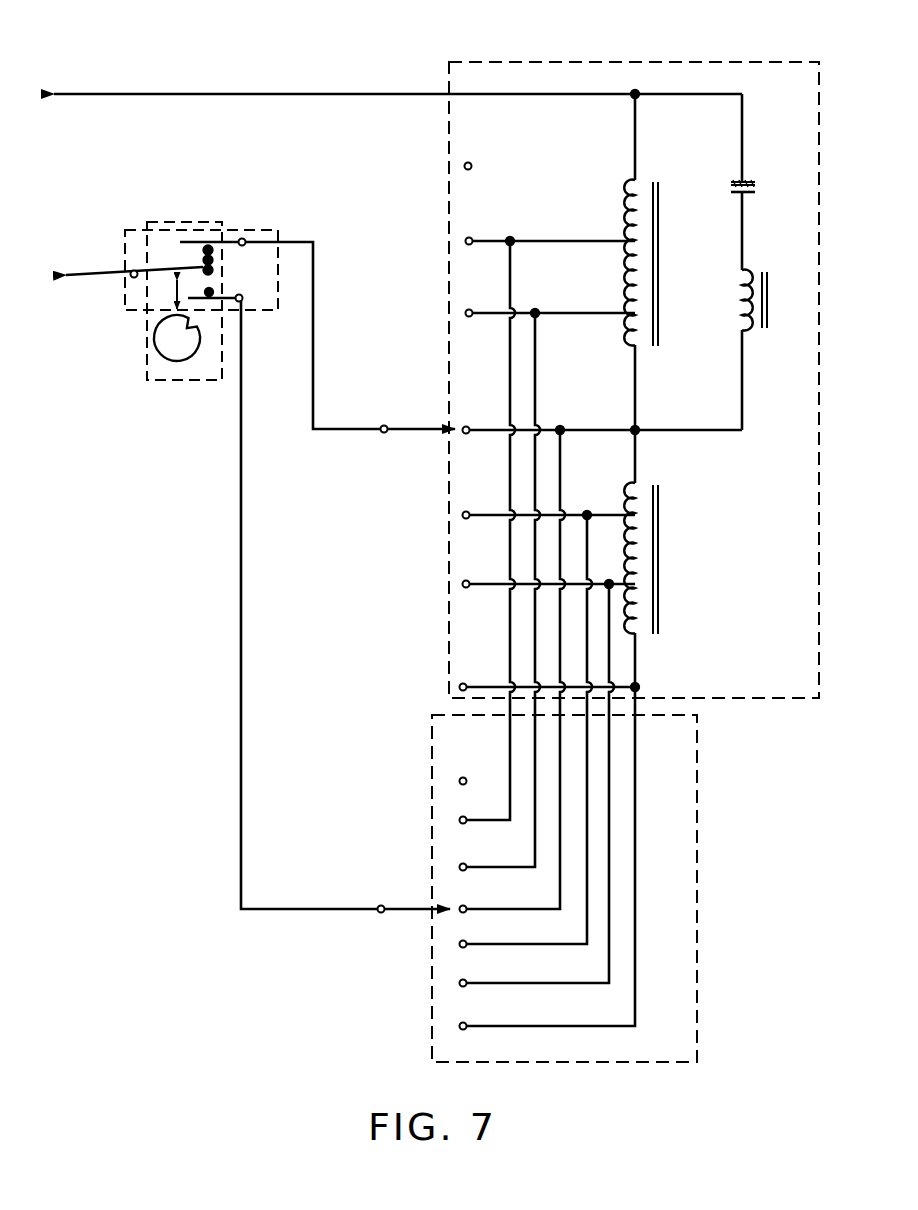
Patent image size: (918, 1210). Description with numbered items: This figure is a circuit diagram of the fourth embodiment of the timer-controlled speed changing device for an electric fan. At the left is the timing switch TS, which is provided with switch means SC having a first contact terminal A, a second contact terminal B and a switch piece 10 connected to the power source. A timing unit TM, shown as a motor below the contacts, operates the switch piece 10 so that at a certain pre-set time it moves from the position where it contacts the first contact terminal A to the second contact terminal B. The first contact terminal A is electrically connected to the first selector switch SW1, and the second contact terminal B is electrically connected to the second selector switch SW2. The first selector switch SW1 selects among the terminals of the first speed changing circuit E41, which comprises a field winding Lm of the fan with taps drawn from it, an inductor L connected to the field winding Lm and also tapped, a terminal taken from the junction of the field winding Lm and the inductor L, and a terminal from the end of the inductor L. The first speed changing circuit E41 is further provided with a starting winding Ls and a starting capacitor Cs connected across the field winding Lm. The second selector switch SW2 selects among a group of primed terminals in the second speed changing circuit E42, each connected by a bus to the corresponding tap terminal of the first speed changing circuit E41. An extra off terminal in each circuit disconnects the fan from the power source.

The switch piece 10 is at (162, 263).
The timing switch TS is at (184, 277).
The switch means SC is at (278, 310).
The timing unit TM is at (177, 362).
The first contact terminal A is at (223, 225).
The second contact terminal B is at (227, 299).
The first selector switch SW1 is at (493, 421).
The second selector switch SW2 is at (375, 665).
The first speed changing circuit E41 is at (565, 58).
The second speed changing circuit E42 is at (703, 887).
The field winding Lm is at (664, 262).
The starting winding Ls is at (770, 300).
The starting capacitor Cs is at (759, 192).
The inductor L is at (655, 558).